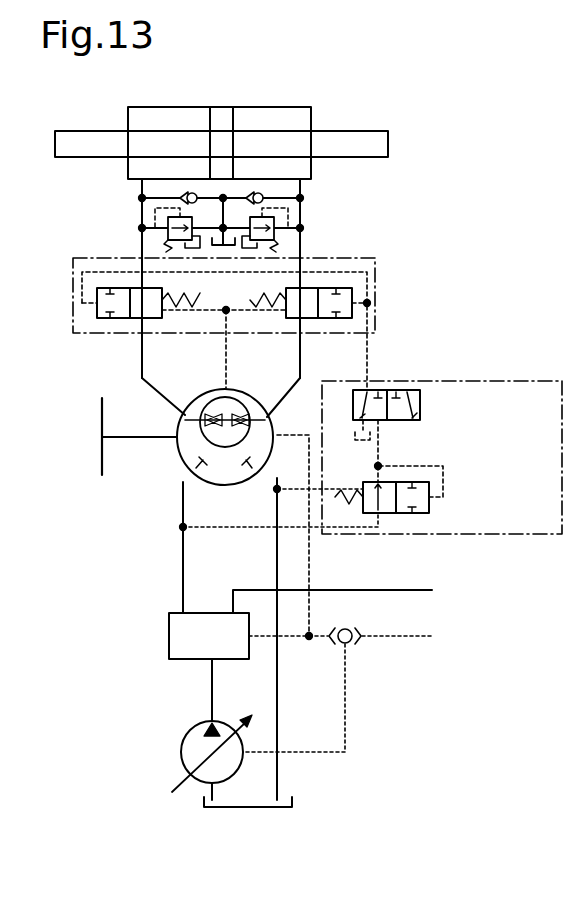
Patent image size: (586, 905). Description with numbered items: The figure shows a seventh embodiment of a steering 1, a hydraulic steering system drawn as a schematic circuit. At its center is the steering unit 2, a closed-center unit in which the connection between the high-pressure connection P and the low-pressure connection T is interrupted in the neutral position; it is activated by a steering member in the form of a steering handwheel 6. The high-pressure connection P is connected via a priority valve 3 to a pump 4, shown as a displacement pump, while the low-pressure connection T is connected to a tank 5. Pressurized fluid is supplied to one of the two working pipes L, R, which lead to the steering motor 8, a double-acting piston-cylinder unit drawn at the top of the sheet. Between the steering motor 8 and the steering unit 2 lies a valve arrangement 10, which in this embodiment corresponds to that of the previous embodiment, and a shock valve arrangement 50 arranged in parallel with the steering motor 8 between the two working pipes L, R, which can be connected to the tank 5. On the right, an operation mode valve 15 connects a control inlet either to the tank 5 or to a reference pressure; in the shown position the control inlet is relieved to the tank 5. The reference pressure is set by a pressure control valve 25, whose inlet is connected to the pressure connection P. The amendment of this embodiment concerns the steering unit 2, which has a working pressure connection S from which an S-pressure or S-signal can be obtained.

The steering 1 is at (413, 129).
The steering unit 2 is at (190, 438).
The priority valve 3 is at (183, 630).
The pump 4 is at (185, 750).
The tank 5 is at (271, 806).
The steering handwheel 6 is at (97, 410).
The steering motor 8 is at (281, 113).
The valve arrangement 10 is at (376, 268).
The operation mode valve 15 is at (427, 406).
The pressure control valve 25 is at (428, 521).
The shock valve arrangement 50 is at (305, 208).